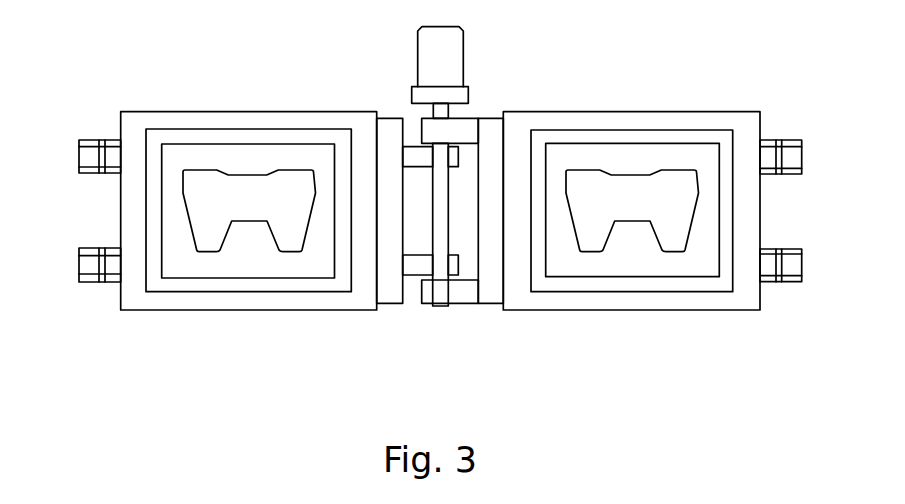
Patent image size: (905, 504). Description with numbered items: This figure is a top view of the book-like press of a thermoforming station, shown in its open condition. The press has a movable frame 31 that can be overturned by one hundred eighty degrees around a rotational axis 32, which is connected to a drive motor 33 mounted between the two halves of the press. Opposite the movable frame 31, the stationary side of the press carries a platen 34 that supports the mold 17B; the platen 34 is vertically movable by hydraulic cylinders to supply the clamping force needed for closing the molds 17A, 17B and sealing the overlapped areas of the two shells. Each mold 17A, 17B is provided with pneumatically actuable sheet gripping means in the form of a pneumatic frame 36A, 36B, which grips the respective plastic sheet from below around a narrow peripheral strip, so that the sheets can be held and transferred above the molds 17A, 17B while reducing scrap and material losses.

The movable frame 31 is at (125, 202).
The platen 34 is at (753, 202).
The pneumatic frame 36A is at (188, 283).
The pneumatic frame 36B is at (693, 285).
The mold 17A is at (291, 268).
The mold 17B is at (590, 267).
The drive motor 33 is at (430, 57).
The rotational axis 32 is at (440, 110).